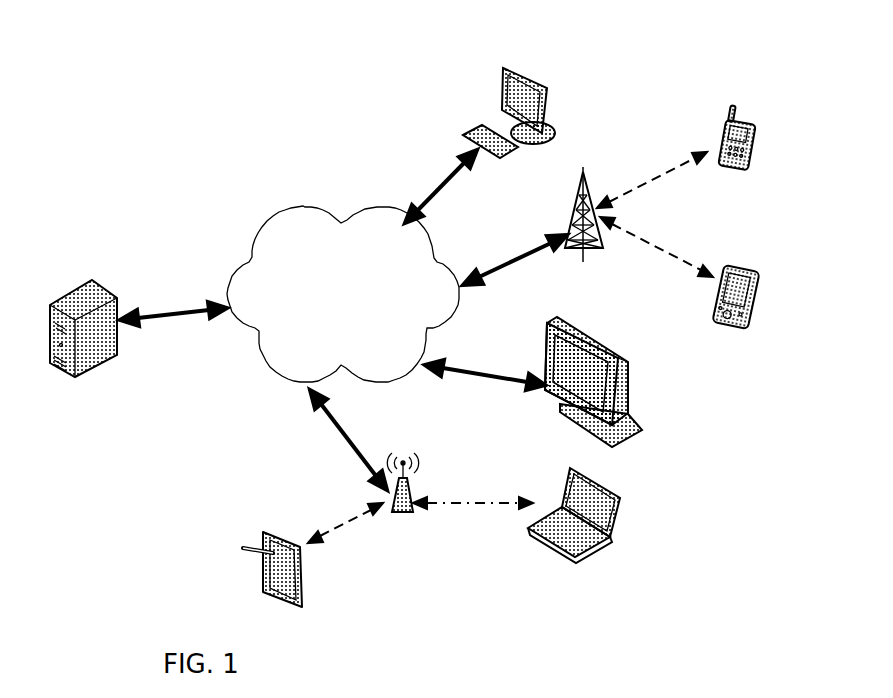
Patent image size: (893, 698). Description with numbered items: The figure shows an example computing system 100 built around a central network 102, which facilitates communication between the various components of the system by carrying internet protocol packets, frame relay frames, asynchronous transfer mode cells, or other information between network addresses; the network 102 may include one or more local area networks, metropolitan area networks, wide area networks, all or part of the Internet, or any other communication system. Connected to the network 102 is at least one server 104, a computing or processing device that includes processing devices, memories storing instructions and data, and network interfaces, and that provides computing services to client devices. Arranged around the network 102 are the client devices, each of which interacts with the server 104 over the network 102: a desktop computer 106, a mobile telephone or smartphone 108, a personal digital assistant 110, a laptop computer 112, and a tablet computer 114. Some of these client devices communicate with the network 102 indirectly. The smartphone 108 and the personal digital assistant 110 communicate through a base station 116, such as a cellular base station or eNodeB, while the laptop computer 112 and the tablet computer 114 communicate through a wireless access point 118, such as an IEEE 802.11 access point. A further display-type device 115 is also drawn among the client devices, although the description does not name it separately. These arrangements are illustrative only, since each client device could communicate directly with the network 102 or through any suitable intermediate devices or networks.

The computing system 100 is at (187, 77).
The network 102 is at (265, 211).
The server 104 is at (63, 298).
The desktop computer 106 is at (503, 70).
The mobile telephone or smartphone 108 is at (752, 122).
The personal digital assistant (PDA) 110 is at (747, 277).
The laptop computer 112 is at (597, 547).
The tablet computer 114 is at (263, 533).
The display device 115 is at (640, 425).
The base station 116 is at (605, 248).
The wireless access point 118 is at (413, 490).